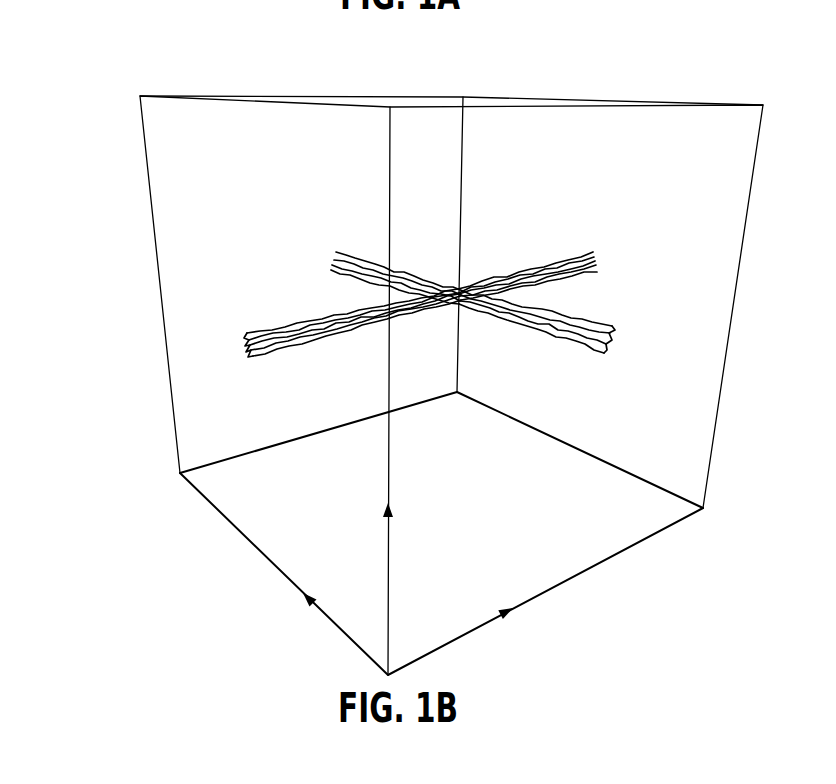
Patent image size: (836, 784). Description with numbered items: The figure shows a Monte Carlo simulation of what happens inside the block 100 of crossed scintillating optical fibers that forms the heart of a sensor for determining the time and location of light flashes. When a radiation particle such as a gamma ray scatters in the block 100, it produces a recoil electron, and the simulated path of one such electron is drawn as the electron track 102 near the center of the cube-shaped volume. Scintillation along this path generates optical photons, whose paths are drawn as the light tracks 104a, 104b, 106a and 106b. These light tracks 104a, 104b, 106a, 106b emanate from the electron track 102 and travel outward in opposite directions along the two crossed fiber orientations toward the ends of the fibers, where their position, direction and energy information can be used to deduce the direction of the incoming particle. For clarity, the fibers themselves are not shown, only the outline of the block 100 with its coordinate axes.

The block of crossed scintillating optical fibers 100 is at (128, 46).
The electron track 102 is at (478, 284).
The light track 104a is at (278, 342).
The light track 104b is at (567, 264).
The light track 106a is at (577, 352).
The light track 106b is at (346, 256).